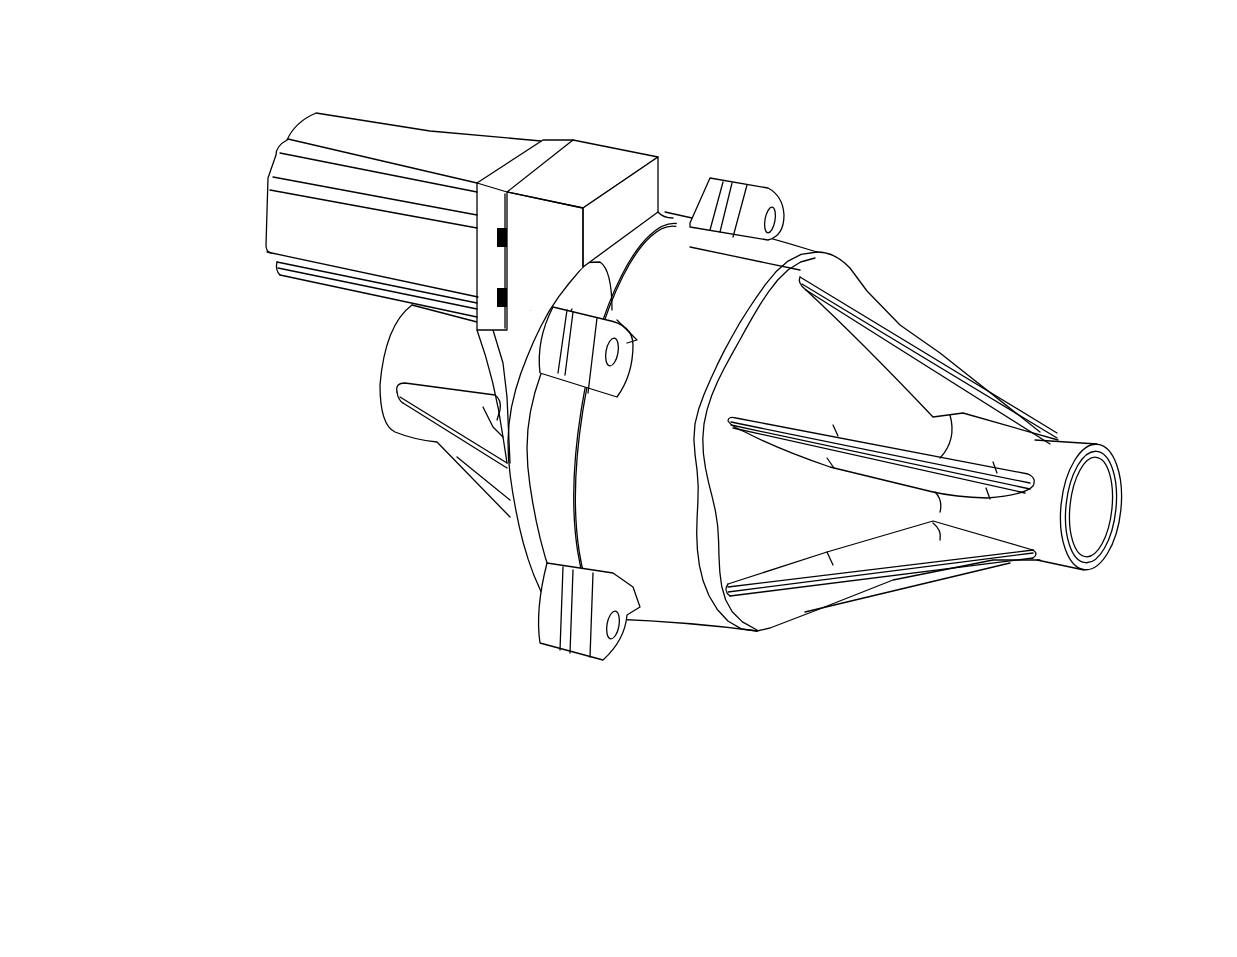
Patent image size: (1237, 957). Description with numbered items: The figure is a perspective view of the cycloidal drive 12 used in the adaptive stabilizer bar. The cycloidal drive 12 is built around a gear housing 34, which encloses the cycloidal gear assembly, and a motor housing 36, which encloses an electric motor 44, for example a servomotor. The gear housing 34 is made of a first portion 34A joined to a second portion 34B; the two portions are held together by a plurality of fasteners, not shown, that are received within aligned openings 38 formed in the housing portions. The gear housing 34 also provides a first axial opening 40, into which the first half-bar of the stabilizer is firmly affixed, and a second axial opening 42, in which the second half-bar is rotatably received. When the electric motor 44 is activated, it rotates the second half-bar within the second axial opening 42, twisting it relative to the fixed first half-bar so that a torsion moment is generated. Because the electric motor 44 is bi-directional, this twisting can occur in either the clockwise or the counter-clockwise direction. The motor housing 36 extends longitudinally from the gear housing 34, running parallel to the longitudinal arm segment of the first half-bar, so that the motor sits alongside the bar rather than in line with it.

The cycloidal drive 12 is at (963, 172).
The gear housing 34 is at (1067, 805).
The first portion 34A is at (507, 503).
The second portion 34B is at (850, 281).
The motor housing 36 is at (315, 74).
The aligned openings 38 is at (614, 352).
The first axial opening 40 is at (375, 418).
The second axial opening 42 is at (1093, 495).
The electric motor 44 is at (328, 240).